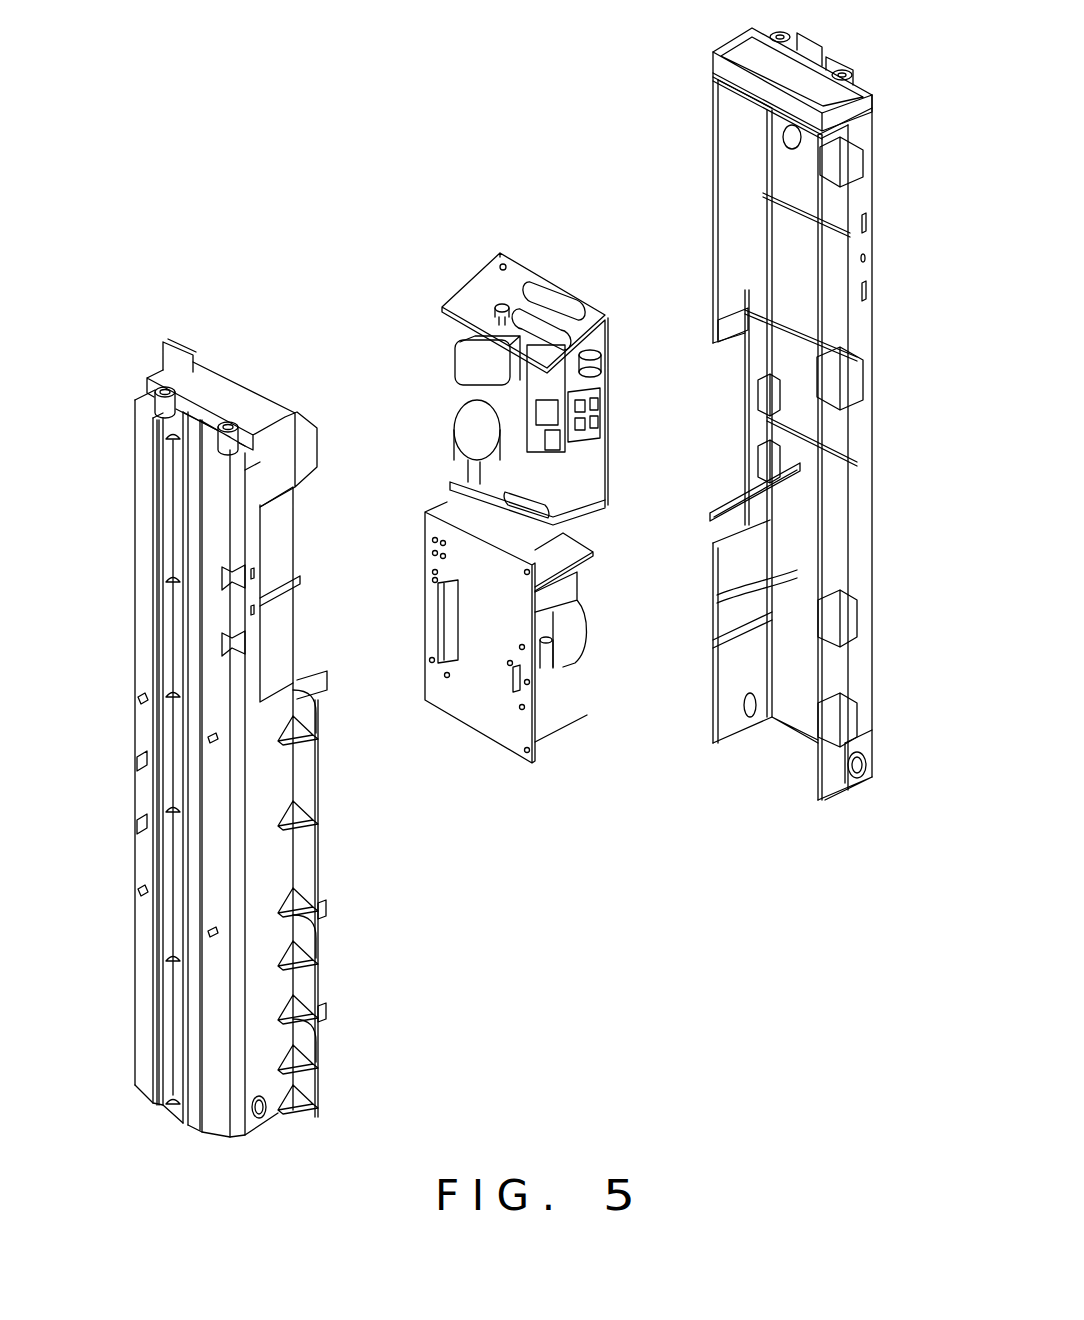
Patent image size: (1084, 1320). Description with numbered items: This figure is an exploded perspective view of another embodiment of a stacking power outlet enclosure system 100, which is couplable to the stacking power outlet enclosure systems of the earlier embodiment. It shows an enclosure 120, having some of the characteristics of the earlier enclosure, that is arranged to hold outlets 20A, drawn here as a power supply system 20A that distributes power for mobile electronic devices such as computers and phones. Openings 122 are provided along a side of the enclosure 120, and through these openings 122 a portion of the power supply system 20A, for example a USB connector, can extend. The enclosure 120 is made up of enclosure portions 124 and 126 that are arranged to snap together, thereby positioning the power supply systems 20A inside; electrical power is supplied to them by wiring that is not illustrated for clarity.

The power supply assembly 100 is at (251, 149).
The enclosure 120 is at (471, 160).
The openings 122 is at (299, 526).
The enclosure portion 124 is at (137, 562).
The enclosure portion 126 is at (872, 517).
The power supply system 20A is at (581, 268).